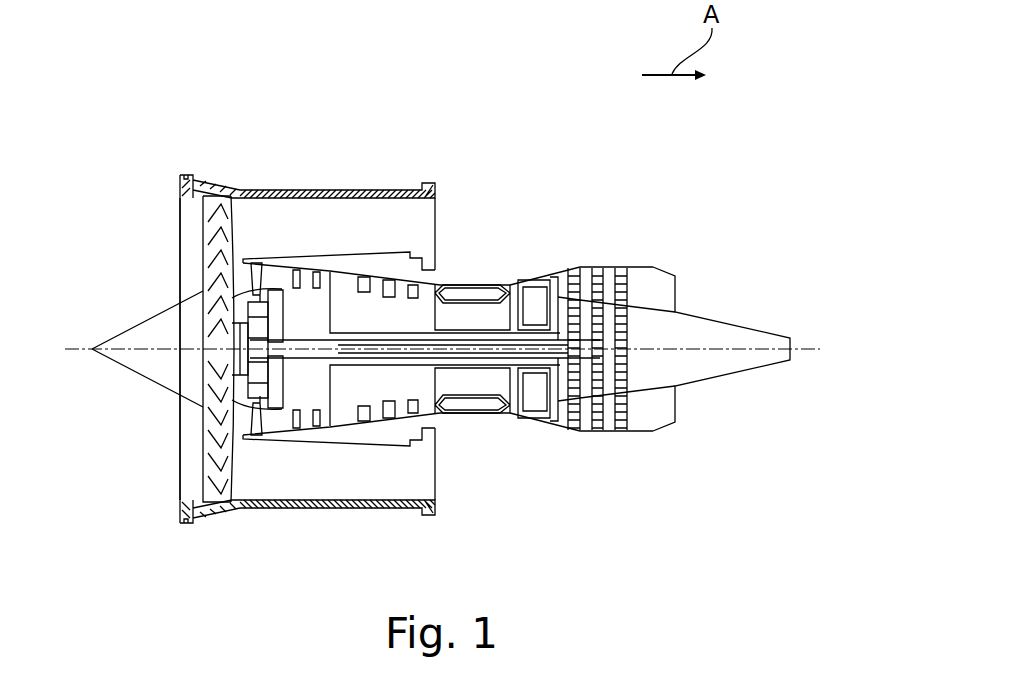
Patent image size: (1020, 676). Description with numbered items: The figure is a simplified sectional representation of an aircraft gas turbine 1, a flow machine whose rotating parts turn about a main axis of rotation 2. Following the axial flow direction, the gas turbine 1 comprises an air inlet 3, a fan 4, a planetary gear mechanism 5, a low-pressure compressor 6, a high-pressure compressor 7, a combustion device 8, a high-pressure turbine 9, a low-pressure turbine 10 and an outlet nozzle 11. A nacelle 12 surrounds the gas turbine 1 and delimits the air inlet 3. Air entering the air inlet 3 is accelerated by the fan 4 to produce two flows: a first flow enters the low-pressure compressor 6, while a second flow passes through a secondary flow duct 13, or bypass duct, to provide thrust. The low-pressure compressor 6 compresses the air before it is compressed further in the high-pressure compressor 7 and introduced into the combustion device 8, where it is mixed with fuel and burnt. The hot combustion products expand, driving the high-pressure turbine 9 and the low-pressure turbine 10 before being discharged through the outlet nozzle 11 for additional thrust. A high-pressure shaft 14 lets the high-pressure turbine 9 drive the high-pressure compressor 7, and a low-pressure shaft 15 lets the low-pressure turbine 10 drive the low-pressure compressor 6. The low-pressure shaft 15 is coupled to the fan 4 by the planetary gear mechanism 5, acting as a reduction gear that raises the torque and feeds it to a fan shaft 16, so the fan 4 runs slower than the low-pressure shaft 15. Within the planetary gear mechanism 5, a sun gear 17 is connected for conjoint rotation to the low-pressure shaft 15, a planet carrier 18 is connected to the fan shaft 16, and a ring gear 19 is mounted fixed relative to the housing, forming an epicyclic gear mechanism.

The gas turbine 1 is at (678, 193).
The main axis of rotation 2 is at (75, 347).
The air inlet 3 is at (150, 213).
The fan 4 is at (207, 470).
The planetary gear mechanism 5 is at (280, 400).
The low-pressure compressor 6 is at (317, 280).
The high-pressure compressor 7 is at (426, 307).
The combustion device 8 is at (471, 410).
The high-pressure turbine 9 is at (553, 282).
The low-pressure turbine 10 is at (598, 272).
The outlet nozzle 11 is at (668, 298).
The nacelle 12 is at (377, 191).
The secondary flow duct 13 is at (426, 213).
The high-pressure shaft 14 is at (525, 368).
The low-pressure shaft 15 is at (330, 362).
The fan shaft 16 is at (232, 358).
The sun gear 17 is at (258, 343).
The planet carrier 18 is at (248, 318).
The ring gear 19 is at (258, 424).